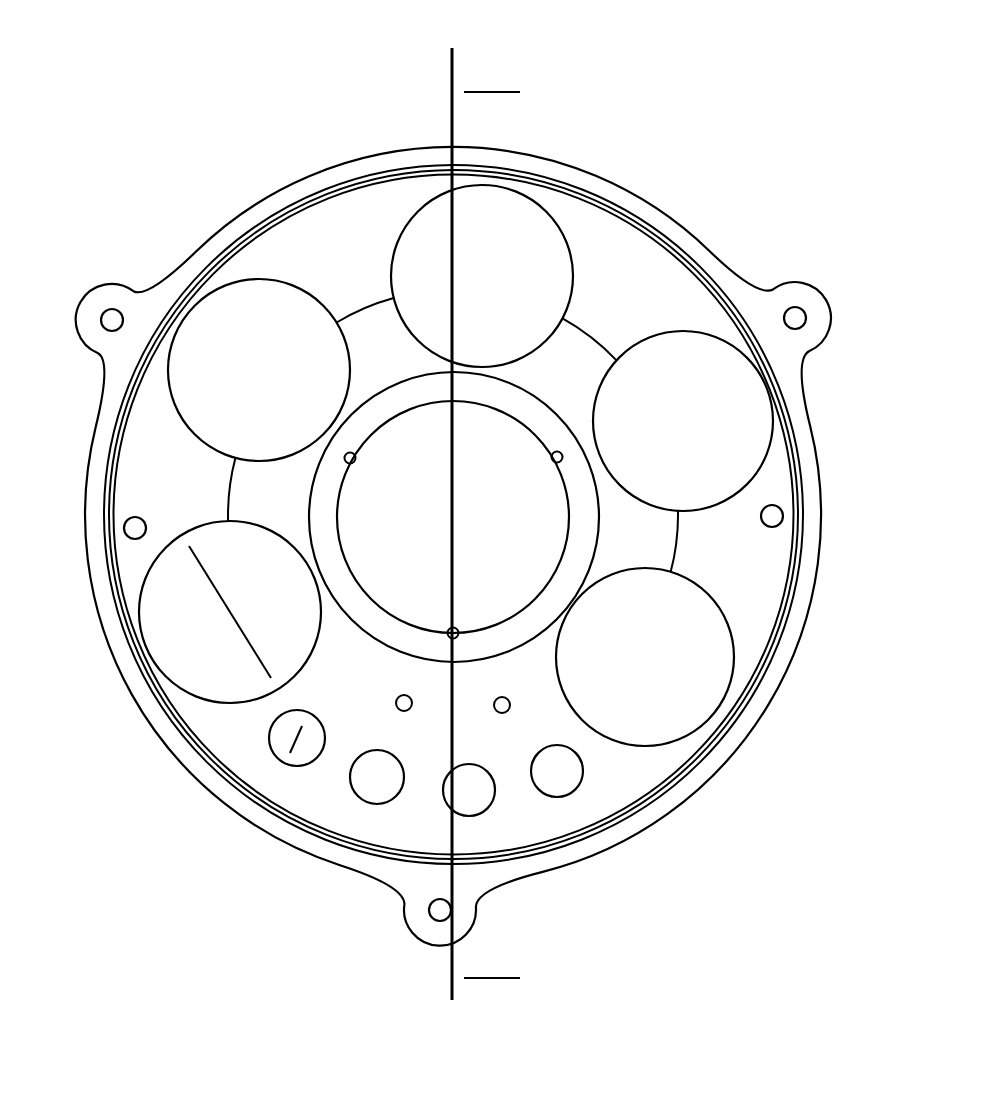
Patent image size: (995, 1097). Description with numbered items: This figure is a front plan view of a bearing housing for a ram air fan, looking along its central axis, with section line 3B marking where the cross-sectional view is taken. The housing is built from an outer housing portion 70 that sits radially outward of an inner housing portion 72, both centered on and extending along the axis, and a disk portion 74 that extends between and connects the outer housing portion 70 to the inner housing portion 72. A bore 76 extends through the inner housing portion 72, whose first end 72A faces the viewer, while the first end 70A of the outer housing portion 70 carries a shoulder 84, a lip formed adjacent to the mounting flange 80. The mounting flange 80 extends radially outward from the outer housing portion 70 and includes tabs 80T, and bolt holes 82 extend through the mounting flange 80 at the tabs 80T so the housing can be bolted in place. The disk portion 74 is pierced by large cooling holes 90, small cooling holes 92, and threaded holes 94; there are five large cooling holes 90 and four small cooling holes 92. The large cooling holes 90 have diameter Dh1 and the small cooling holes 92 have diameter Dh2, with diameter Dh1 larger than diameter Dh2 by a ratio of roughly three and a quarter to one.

The outer housing portion 70 is at (610, 215).
The first end 70A is at (504, 481).
The inner housing portion 72 is at (577, 537).
The first end 72A is at (632, 520).
The disk portion 74 is at (630, 300).
The bore 76 is at (408, 505).
The mounting flange 80 is at (800, 435).
The tabs 80T is at (76, 318).
The bolt holes 82 is at (112, 318).
The shoulder 84 is at (288, 203).
The large cooling holes 90 is at (423, 235).
The small cooling holes 92 is at (285, 735).
The threaded holes 94 is at (398, 703).
The diameter Dh1 is at (232, 612).
The diameter Dh2 is at (300, 740).
The line 3B- 3B is at (504, 524).